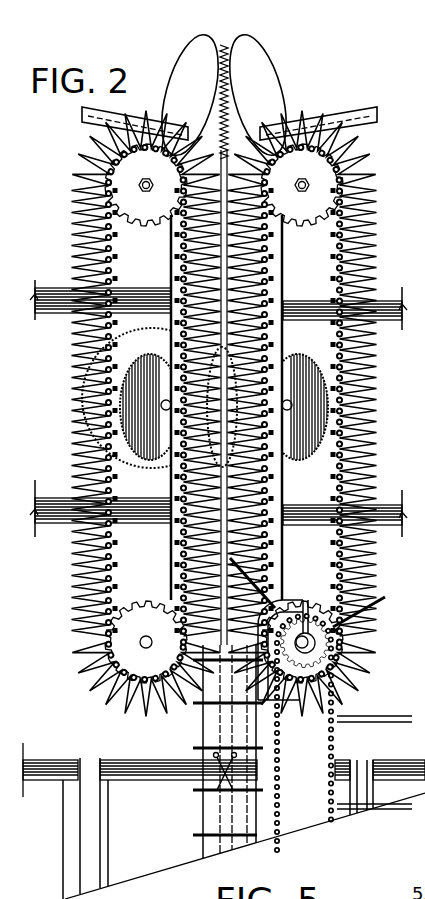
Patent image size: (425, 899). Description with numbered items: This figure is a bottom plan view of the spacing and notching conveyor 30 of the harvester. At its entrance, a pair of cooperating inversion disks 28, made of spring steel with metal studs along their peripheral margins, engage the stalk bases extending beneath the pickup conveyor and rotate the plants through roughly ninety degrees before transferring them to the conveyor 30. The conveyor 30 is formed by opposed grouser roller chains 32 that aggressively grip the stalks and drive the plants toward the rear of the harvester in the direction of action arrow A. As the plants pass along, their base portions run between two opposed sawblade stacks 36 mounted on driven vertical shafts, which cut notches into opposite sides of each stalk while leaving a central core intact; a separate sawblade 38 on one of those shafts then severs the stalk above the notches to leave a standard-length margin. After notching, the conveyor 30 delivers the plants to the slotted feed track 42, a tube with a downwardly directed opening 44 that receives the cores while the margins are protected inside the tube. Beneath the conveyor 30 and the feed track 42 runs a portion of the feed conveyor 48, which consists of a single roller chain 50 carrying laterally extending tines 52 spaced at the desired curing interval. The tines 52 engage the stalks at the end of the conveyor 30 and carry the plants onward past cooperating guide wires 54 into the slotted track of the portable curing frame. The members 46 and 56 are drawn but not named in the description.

The inversion disks 28 is at (185, 73).
The spacing and notching conveyor 30 is at (349, 78).
The grouser roller chains 32 is at (77, 238).
The sawblade stacks 36 is at (300, 373).
The sawblade 38 is at (153, 342).
The feed track 42 is at (202, 718).
The opening 44 is at (222, 723).
The frame beam 46 is at (132, 763).
The feed conveyor 48 is at (368, 700).
The roller chain 50 is at (334, 742).
The tines 52 is at (398, 808).
The guide wires 54 is at (215, 778).
The support posts 56 is at (72, 838).
The action arrow A is at (424, 415).